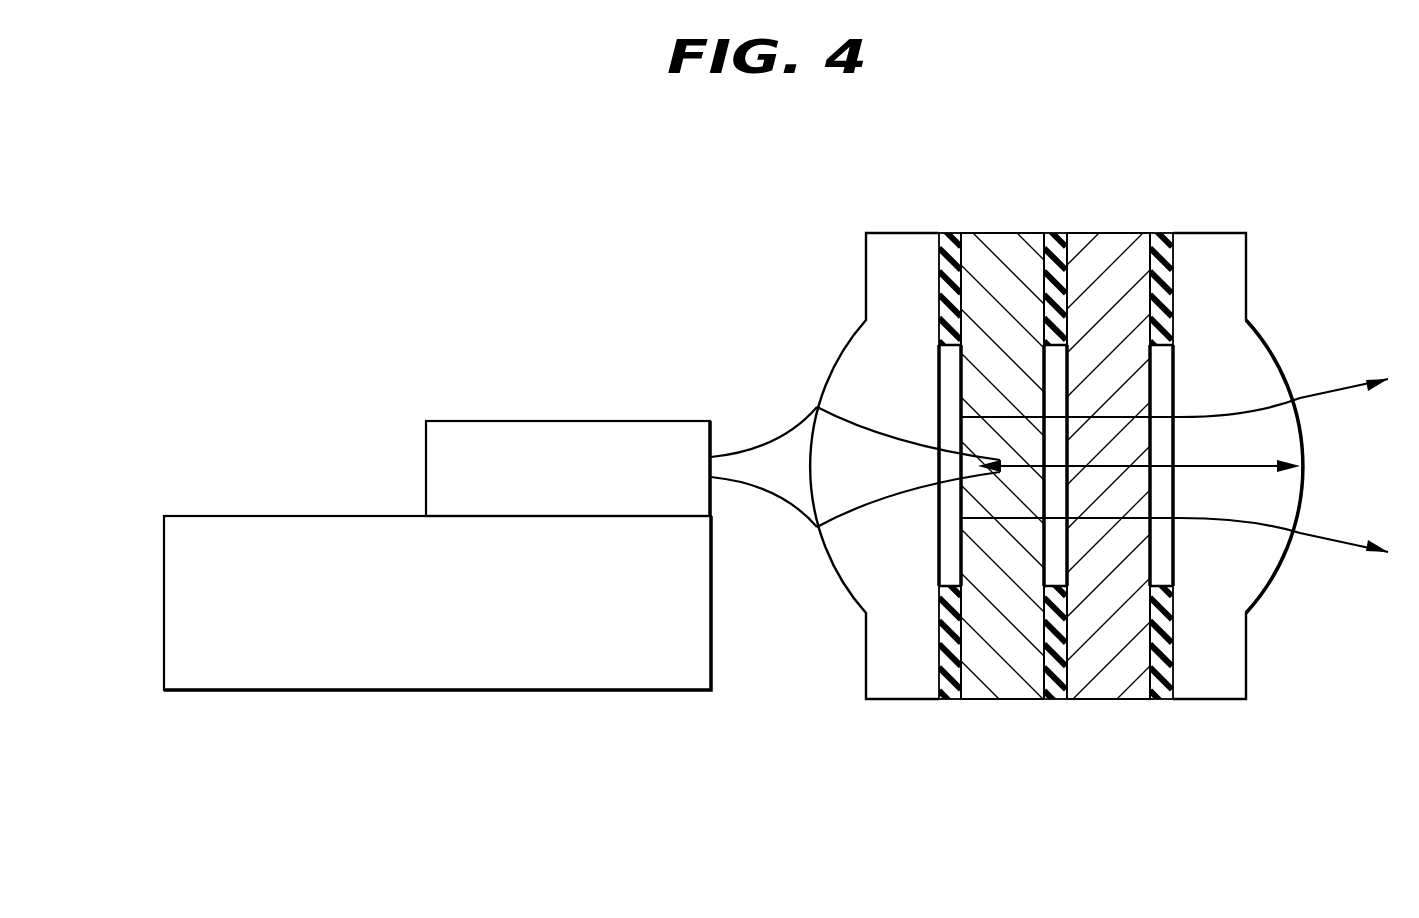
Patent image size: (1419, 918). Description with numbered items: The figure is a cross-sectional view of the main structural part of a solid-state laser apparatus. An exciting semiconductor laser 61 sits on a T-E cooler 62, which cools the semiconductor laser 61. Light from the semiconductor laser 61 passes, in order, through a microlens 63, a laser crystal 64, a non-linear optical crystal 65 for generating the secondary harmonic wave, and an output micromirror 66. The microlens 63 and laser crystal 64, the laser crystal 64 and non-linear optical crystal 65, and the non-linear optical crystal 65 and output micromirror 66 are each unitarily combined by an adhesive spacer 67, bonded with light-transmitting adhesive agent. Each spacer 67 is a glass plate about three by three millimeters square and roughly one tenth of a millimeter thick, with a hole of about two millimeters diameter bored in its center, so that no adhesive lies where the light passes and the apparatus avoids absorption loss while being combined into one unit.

The exciting semiconductor laser 61 is at (497, 430).
The T-E cooler 62 is at (580, 675).
The microlens 63 is at (899, 687).
The laser crystal 64 is at (1003, 687).
The non-linear optical crystal 65 is at (1111, 687).
The output micromirror 66 is at (1213, 687).
The adhesive spacer 67 is at (950, 232).